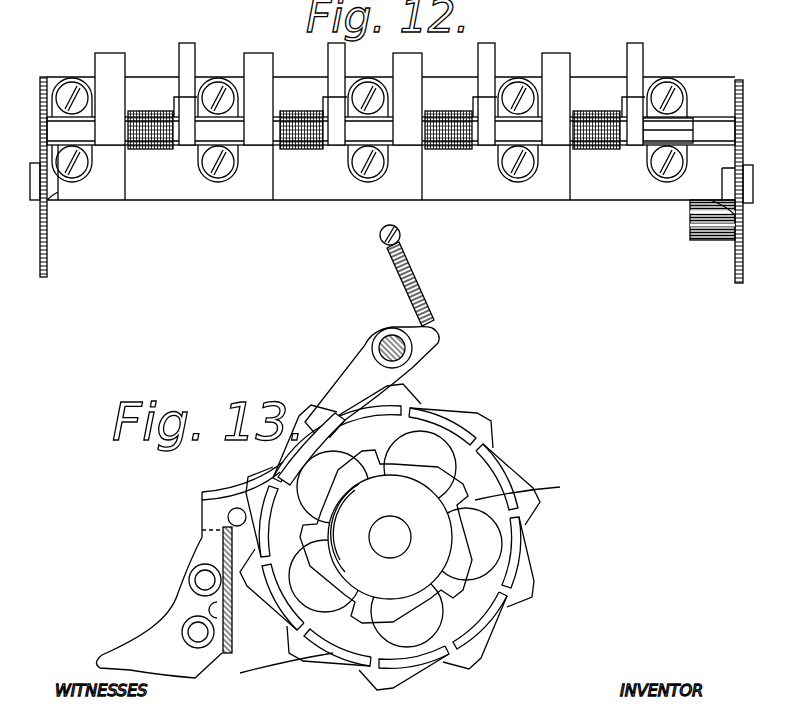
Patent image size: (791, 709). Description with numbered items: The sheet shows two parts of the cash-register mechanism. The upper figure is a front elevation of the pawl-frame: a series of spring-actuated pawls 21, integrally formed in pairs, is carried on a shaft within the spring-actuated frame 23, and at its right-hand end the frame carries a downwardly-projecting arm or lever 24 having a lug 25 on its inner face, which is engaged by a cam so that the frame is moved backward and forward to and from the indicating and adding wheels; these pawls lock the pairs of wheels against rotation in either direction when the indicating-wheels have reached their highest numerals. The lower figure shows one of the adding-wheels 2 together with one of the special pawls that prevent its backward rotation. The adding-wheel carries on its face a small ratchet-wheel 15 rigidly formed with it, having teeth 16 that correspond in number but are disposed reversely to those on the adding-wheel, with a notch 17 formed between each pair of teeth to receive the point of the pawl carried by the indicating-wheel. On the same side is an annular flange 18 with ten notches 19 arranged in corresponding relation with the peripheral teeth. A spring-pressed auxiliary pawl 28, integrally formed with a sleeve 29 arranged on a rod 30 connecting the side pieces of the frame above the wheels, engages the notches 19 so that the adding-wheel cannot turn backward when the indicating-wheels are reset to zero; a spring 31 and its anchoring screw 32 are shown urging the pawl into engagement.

In FIG. 13, the adding wheel 2 is at (478, 494).
In FIG. 13, the ratchet-wheel 15 is at (390, 537).
In FIG. 13, the teeth 16 is at (457, 494).
In FIG. 13, the notch 17 is at (385, 440).
In FIG. 13, the annular flange 18 is at (300, 665).
In FIG. 13, the notches 19 is at (252, 486).
In FIG. 12, the spring-actuated pawls 21 is at (178, 55).
In FIG. 12, the spring-actuated frame 23 is at (178, 202).
In FIG. 12, the arm or lever 24 is at (735, 262).
In FIG. 12, the lug 25 is at (690, 228).
In FIG. 13, the auxiliary pawls 28 is at (350, 386).
In FIG. 13, the sleeves 29 is at (374, 357).
In FIG. 13, the rod 30 is at (406, 349).
In FIG. 13, the spring 31 is at (428, 306).
In FIG. 13, the screw 32 is at (402, 235).